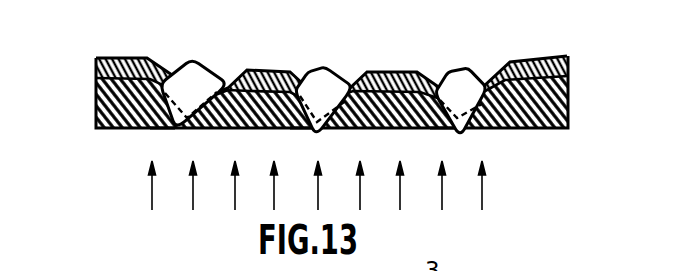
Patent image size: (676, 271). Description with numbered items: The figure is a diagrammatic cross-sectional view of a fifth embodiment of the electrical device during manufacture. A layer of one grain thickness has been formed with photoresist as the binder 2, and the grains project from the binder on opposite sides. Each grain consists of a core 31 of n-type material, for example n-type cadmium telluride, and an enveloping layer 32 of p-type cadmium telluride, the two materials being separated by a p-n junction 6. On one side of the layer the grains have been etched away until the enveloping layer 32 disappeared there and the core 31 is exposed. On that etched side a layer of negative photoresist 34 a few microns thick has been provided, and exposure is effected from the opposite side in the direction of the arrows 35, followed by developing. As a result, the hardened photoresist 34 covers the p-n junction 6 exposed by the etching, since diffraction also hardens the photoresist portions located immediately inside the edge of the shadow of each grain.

The binder 2 is at (108, 105).
The p-n junction 6 is at (160, 130).
The core 31 is at (198, 76).
The enveloping layer 32 is at (207, 126).
The negative photoresist layer 34 is at (130, 74).
The arrows 35 is at (152, 190).